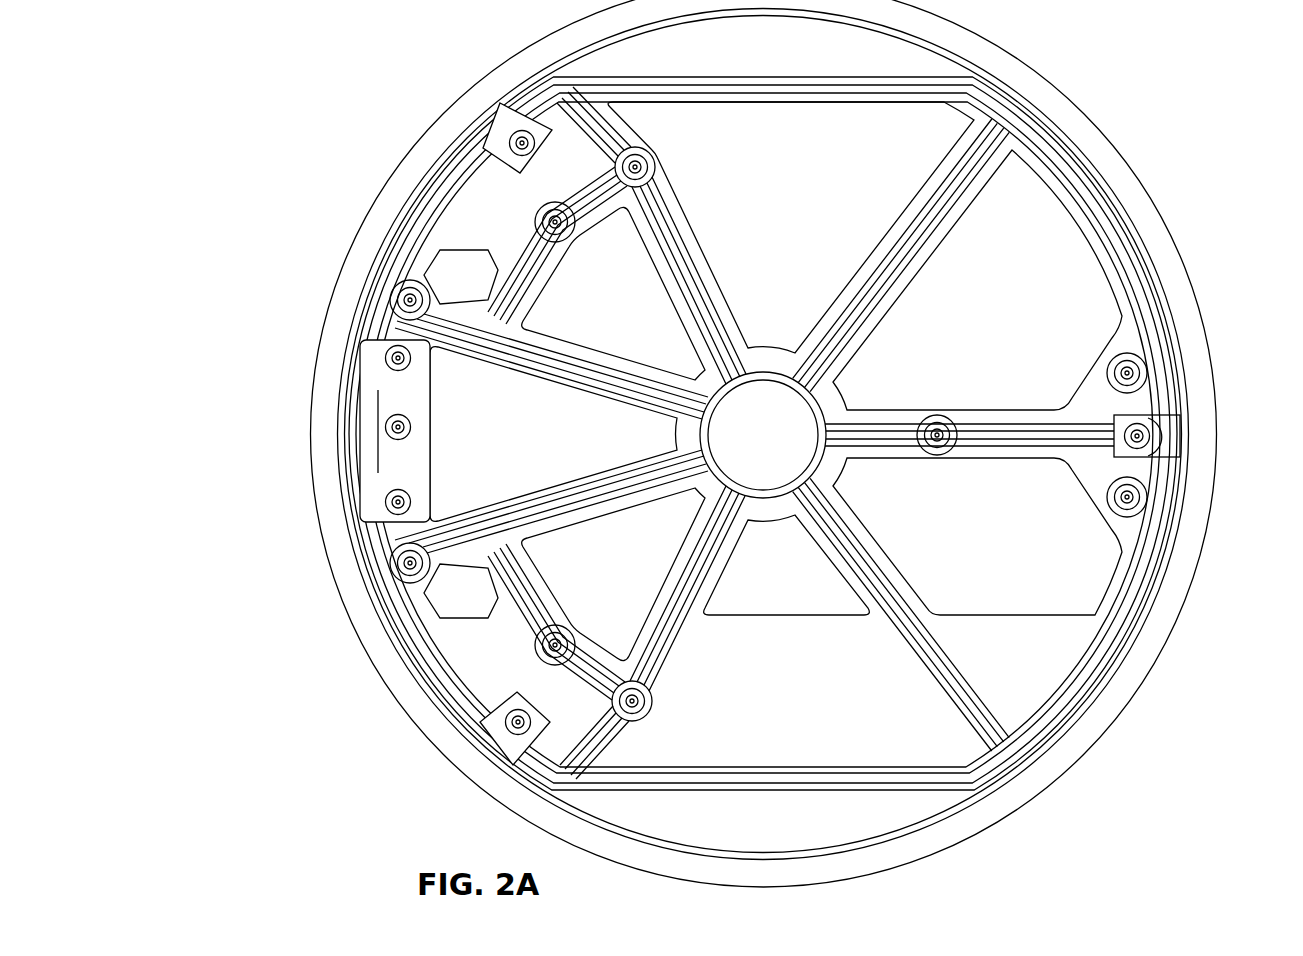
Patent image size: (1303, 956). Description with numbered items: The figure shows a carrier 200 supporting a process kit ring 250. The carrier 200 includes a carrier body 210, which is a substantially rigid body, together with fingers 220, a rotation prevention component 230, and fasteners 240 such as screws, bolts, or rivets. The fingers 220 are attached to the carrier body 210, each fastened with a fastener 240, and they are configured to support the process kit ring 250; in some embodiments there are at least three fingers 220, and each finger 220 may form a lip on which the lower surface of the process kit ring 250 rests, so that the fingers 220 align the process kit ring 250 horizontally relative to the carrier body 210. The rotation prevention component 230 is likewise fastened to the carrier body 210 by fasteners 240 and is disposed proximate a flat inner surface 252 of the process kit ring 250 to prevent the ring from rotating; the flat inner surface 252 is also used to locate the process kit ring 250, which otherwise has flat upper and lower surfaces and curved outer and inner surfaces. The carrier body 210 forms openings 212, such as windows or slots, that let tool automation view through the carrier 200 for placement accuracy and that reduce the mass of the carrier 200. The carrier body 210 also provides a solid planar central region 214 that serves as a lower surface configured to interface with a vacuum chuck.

The carrier 200 is at (231, 139).
The carrier body 210 is at (806, 176).
The openings 212 is at (492, 262).
The solid planar central region 214 is at (781, 447).
The fingers 220 is at (510, 121).
The rotation prevention component 230 is at (331, 380).
The fasteners 240 is at (514, 141).
The process kit ring 250 is at (331, 415).
The flat inner surface 252 is at (376, 362).